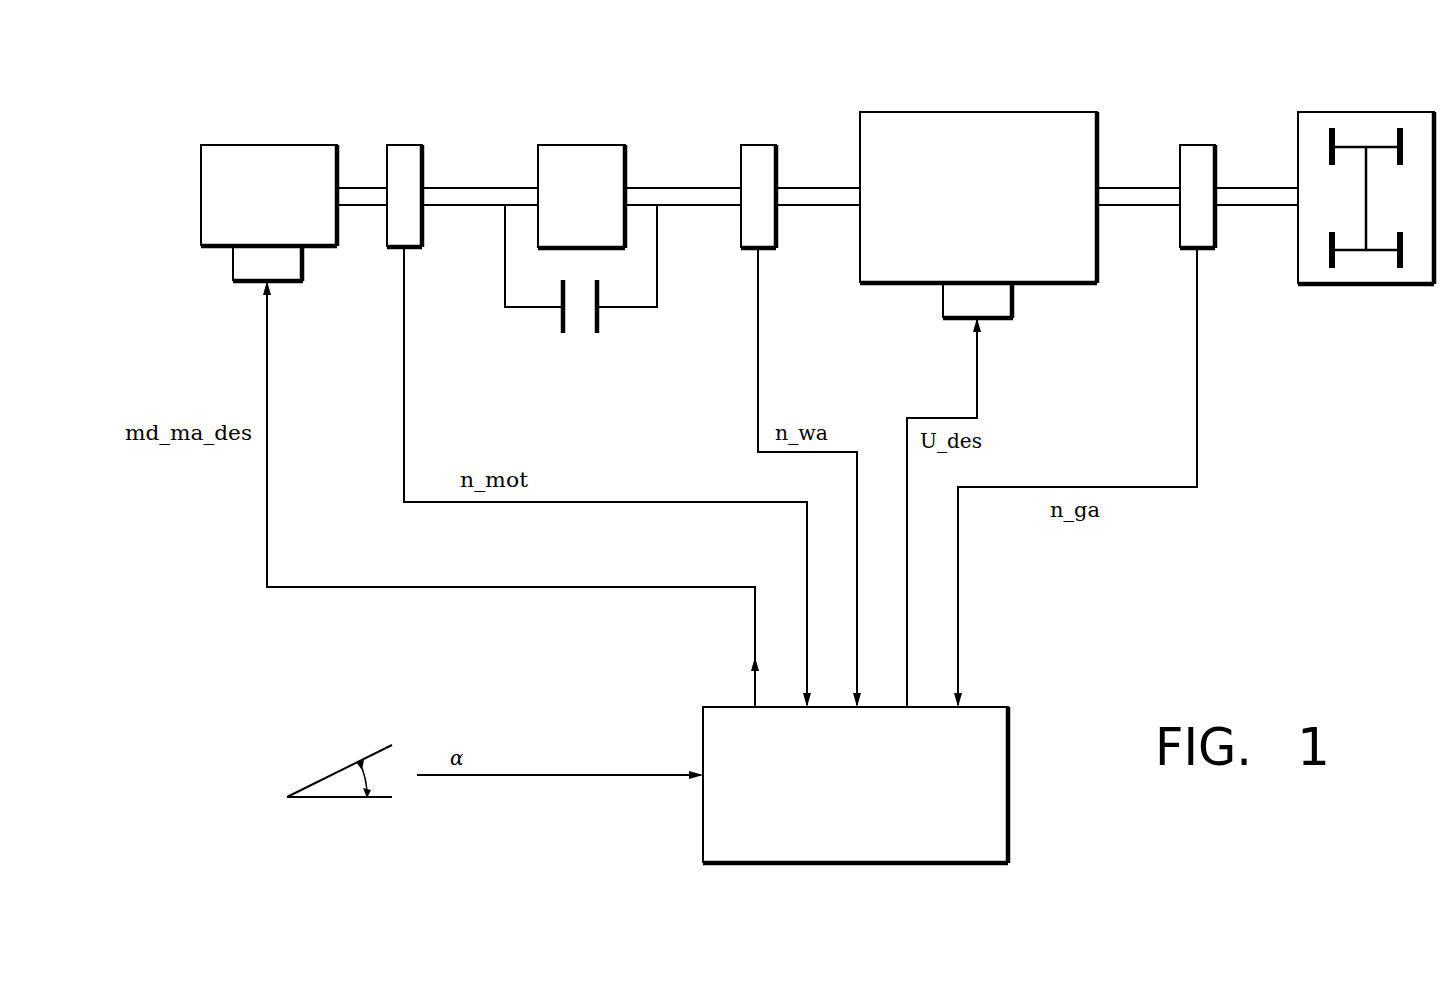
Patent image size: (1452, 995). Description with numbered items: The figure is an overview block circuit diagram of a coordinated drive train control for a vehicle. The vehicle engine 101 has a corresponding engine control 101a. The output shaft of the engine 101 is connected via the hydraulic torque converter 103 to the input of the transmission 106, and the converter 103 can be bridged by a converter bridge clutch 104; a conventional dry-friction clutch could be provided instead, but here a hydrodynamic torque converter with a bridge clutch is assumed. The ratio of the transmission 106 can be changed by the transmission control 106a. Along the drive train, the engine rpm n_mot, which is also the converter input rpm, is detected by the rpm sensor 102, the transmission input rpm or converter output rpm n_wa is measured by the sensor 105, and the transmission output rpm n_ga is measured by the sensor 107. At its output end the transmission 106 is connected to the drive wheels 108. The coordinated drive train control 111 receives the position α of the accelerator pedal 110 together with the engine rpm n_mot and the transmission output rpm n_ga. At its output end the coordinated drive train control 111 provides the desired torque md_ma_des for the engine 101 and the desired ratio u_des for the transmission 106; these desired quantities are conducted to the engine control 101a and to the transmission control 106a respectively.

The vehicle engine 101 is at (267, 165).
The engine control 101a is at (285, 265).
The rpm sensor 102 is at (402, 162).
The hydraulic torque converter 103 is at (576, 167).
The converter bridge clutch 104 is at (580, 317).
The sensor 105 is at (759, 167).
The transmission 106 is at (982, 145).
The transmission control 106a is at (987, 298).
The sensor 107 is at (1196, 172).
The drive wheels 108 is at (1363, 130).
The accelerator pedal 110 is at (338, 800).
The coordinated drive train control 111 is at (898, 827).